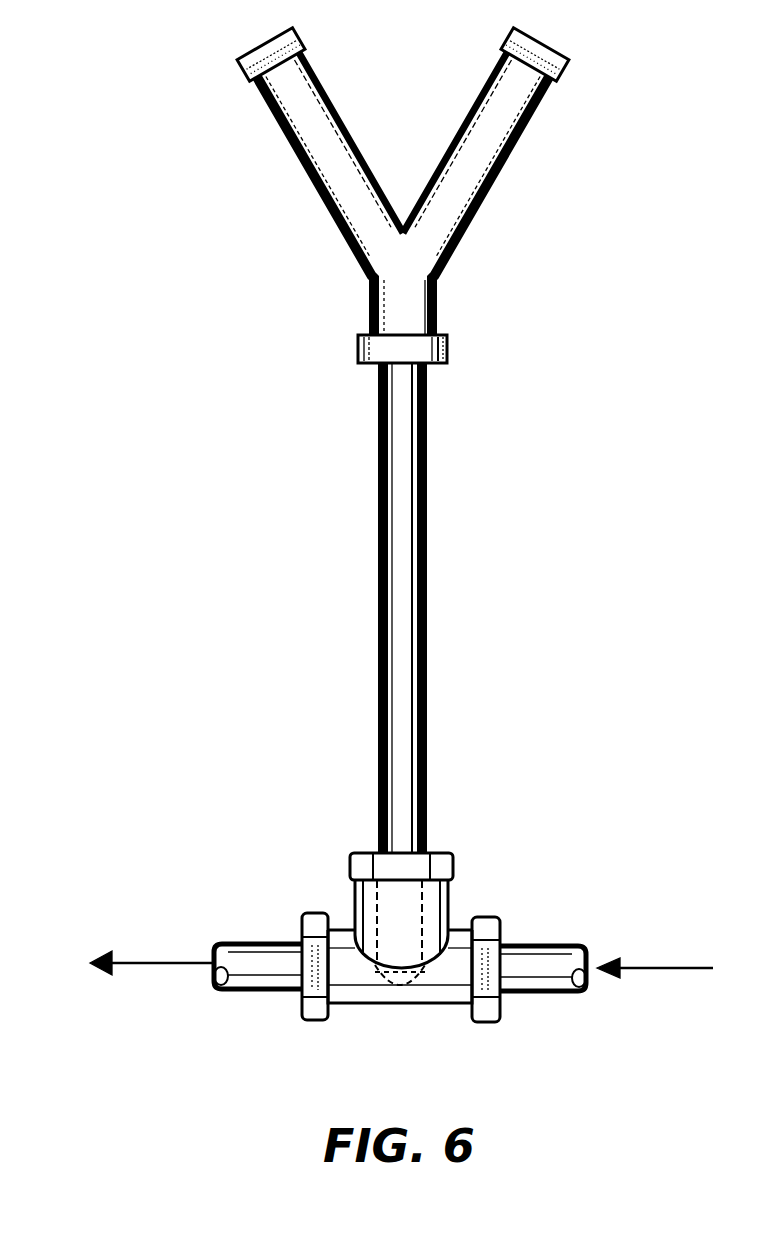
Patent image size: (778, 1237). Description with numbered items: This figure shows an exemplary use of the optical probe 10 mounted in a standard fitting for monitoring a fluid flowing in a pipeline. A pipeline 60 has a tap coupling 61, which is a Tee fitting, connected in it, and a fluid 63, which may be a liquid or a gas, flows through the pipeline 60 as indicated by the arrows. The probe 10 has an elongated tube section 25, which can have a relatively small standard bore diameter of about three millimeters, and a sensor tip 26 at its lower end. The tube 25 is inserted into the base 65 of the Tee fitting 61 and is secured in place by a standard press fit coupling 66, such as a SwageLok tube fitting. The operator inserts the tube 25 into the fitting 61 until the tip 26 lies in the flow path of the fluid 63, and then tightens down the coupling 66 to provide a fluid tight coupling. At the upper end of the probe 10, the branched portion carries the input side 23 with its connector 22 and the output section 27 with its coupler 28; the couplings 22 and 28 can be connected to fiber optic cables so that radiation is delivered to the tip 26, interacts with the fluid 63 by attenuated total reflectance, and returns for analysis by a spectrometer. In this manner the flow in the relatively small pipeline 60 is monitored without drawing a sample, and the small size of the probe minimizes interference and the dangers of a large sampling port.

The optical probe 10 is at (488, 350).
The connector 22 is at (570, 78).
The input side 23 is at (518, 142).
The elongated tube section 25 is at (425, 540).
The sensor tip 26 is at (400, 1003).
The output section 27 is at (318, 197).
The coupler 28 is at (250, 80).
The pipeline 60 is at (550, 940).
The tap coupling 61 is at (408, 1008).
The fluid 63 is at (643, 968).
The base 65 is at (447, 907).
The press fit coupling 66 is at (357, 878).